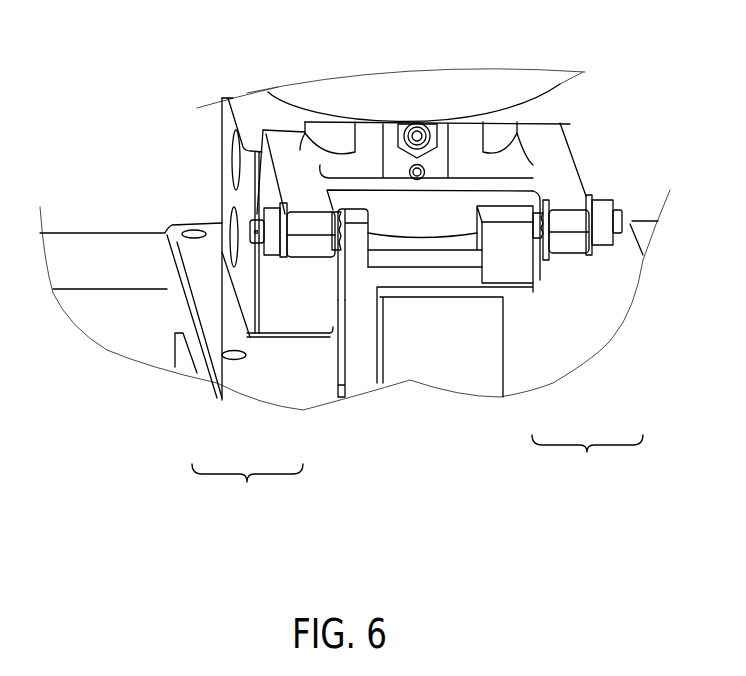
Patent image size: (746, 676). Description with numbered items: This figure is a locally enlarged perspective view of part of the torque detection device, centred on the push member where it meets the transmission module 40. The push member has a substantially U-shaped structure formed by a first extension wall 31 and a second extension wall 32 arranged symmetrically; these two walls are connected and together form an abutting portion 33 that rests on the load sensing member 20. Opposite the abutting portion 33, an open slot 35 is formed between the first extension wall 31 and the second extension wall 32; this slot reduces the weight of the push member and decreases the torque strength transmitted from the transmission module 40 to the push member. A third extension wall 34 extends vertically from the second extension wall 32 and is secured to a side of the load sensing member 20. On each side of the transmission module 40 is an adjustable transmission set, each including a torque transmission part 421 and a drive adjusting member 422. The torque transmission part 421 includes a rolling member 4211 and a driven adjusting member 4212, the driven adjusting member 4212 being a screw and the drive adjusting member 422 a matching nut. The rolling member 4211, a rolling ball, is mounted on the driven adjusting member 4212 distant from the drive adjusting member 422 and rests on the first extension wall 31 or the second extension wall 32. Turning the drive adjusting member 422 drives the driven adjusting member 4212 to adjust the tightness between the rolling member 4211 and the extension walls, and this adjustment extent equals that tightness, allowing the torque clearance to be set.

The load sensing member 20 is at (441, 350).
The first extension wall 31 is at (500, 213).
The second extension wall 32 is at (353, 210).
The abutting portion 33 is at (440, 288).
The third extension wall 34 is at (362, 350).
The open slot 35 is at (417, 222).
The transmission module 40 is at (270, 120).
The torque transmission part 421 is at (417, 474).
The rolling member 4211 is at (335, 265).
The driven adjusting member 4212 is at (252, 243).
The drive adjusting member 422 is at (262, 222).